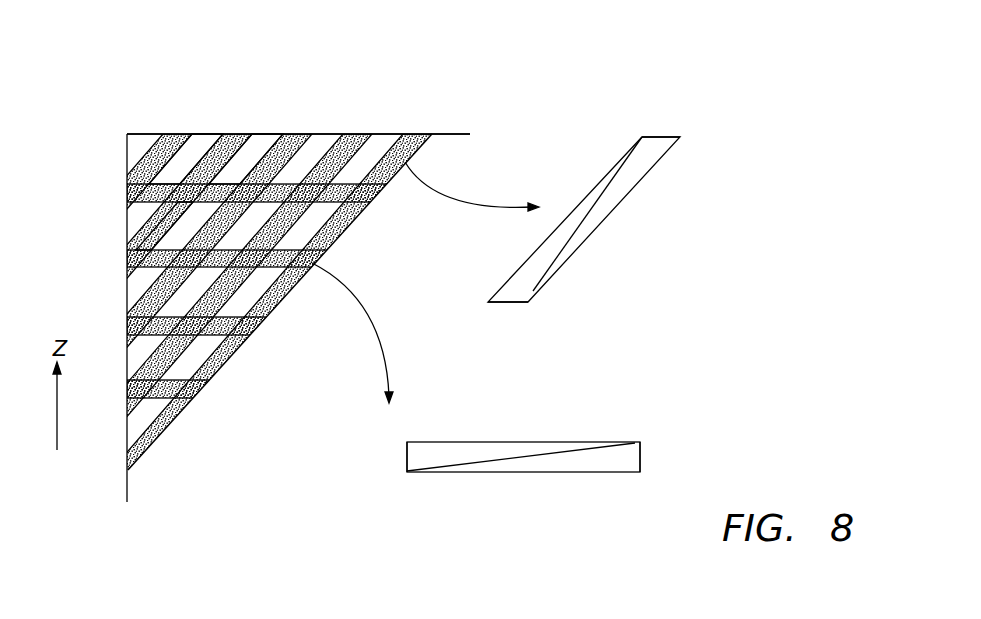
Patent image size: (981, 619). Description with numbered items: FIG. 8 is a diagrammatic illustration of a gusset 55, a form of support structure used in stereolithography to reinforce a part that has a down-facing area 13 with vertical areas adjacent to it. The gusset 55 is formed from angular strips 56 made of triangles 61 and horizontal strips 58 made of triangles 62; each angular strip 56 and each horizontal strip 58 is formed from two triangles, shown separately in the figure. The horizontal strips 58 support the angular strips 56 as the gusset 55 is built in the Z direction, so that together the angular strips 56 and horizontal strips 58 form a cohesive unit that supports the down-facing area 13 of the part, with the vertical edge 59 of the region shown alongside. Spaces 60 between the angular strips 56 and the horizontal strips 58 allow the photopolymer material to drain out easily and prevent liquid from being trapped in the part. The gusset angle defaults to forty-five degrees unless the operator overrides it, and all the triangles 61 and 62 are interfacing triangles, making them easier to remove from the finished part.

The down-facing area 13 is at (338, 134).
The gusset 55 is at (410, 97).
The angular strips 56 is at (212, 148).
The horizontal strips 58 is at (348, 180).
The vertical edge 59 is at (127, 296).
The spaces 60 is at (270, 138).
The triangles 61 is at (650, 140).
The triangles 62 is at (487, 450).